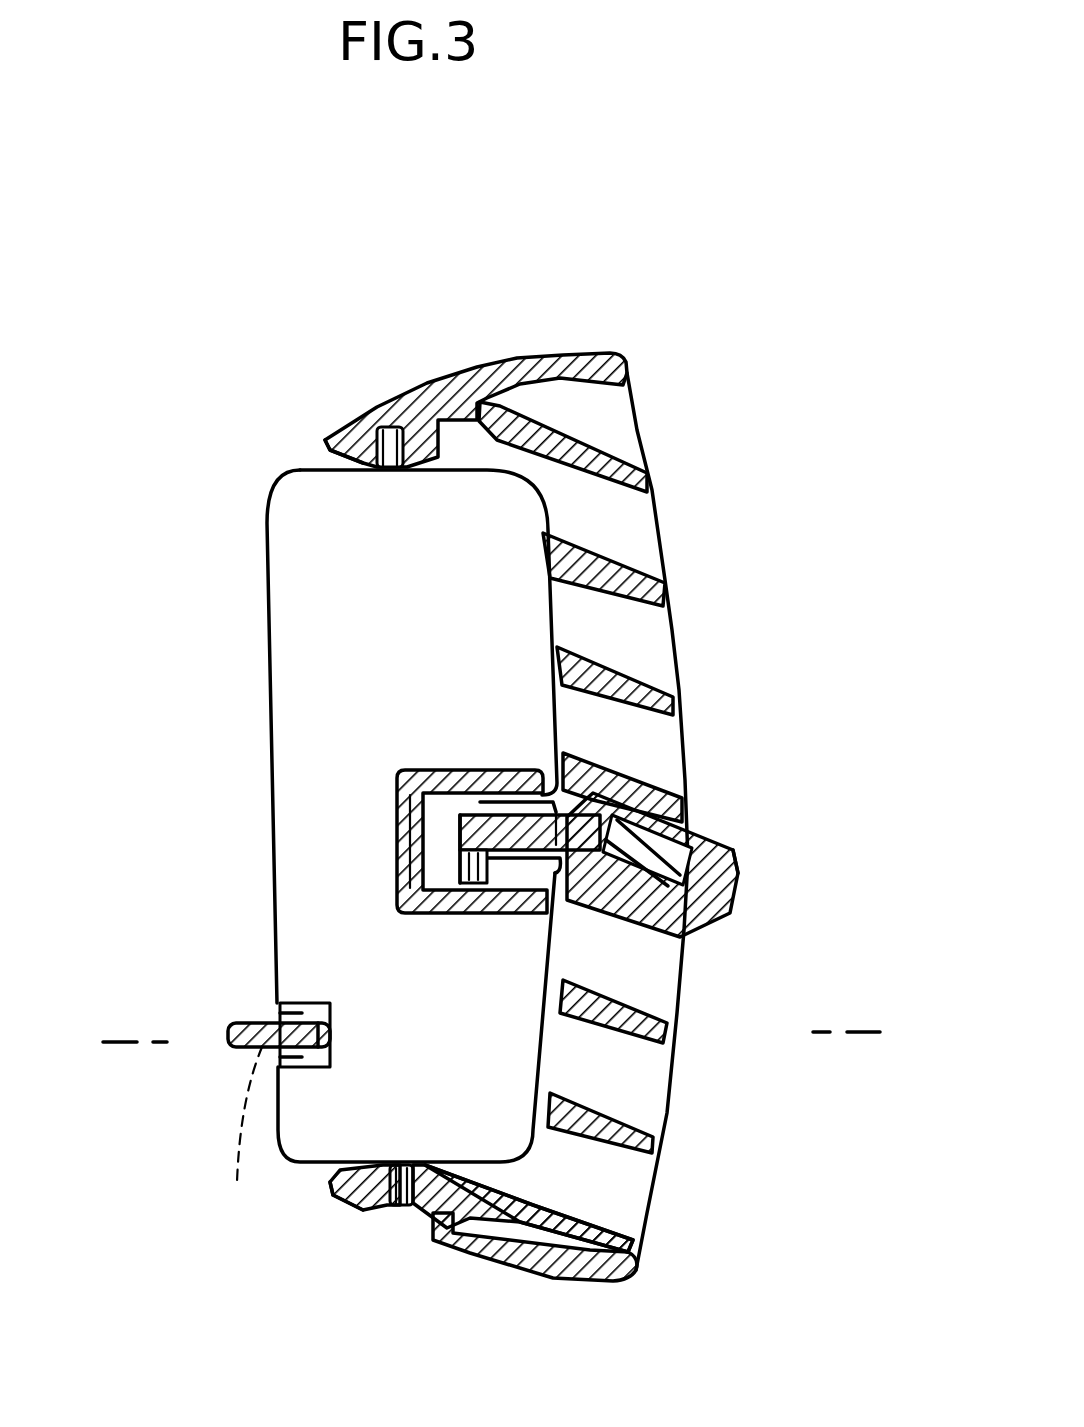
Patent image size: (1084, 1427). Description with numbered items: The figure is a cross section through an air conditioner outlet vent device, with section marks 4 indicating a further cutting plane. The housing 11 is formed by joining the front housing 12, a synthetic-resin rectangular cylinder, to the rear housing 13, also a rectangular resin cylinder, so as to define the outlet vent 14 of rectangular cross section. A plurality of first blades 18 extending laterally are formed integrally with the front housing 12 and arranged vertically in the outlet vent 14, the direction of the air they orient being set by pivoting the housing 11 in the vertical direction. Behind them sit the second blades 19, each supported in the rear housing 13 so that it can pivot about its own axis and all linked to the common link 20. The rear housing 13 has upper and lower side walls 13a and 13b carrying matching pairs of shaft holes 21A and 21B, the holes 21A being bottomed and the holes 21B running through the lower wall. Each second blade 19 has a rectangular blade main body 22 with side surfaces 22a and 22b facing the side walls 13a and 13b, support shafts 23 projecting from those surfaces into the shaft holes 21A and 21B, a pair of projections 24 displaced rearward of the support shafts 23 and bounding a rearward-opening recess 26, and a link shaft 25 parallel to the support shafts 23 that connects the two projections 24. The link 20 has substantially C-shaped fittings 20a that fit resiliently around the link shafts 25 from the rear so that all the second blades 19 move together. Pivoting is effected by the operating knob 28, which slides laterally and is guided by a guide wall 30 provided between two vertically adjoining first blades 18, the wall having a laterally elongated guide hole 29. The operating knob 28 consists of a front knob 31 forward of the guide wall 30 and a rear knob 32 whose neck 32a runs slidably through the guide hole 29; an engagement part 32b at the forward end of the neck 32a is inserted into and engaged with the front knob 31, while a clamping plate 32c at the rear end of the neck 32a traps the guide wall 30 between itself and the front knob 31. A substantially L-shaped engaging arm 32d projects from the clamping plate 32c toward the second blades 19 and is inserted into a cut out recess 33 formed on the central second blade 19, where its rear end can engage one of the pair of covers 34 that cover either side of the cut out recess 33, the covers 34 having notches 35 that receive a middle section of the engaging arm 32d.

The section line 4- 4 is at (115, 980).
The housing 11 is at (590, 230).
The front housing 12 is at (557, 352).
The rear housing 13 is at (392, 400).
The upper side wall 13a is at (325, 440).
The lower side wall 13b is at (363, 1213).
The outlet vent 14 is at (637, 542).
The first blades 18 is at (672, 1012).
The second blades 19 is at (252, 598).
The link 20 is at (232, 1037).
The fittings 20a is at (330, 1010).
The shaft holes 21A is at (392, 400).
The shaft holes 21B is at (407, 1165).
The blade main body 22 is at (303, 663).
The side surface 22a is at (493, 440).
The side surface 22b is at (478, 1164).
The support shafts 23 is at (363, 437).
The projections 24 is at (293, 1013).
The link shaft 25 is at (234, 1138).
The recess 26 is at (333, 1045).
The operating knob 28 is at (773, 540).
The guide hole 29 is at (623, 885).
The guide wall 30 is at (550, 850).
The front knob 31 is at (718, 830).
The rear knob 32 is at (565, 751).
The neck 32a is at (517, 815).
The engagement part 32b is at (730, 902).
The clamping plate 32c is at (470, 884).
The engaging arm 32d is at (405, 790).
The cut out recess 33 is at (403, 832).
The covers 34 is at (457, 812).
The notches 35 is at (558, 825).